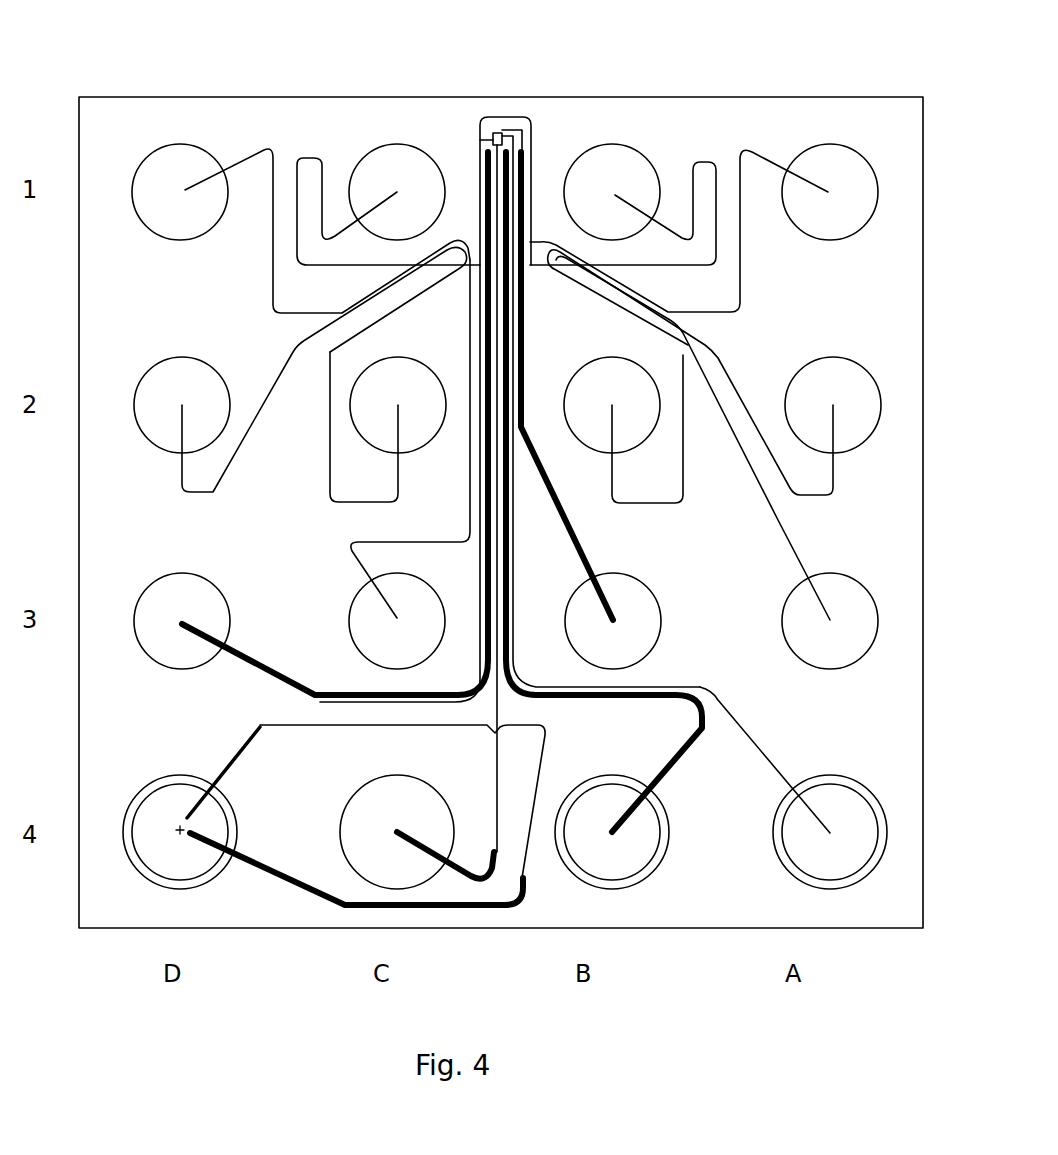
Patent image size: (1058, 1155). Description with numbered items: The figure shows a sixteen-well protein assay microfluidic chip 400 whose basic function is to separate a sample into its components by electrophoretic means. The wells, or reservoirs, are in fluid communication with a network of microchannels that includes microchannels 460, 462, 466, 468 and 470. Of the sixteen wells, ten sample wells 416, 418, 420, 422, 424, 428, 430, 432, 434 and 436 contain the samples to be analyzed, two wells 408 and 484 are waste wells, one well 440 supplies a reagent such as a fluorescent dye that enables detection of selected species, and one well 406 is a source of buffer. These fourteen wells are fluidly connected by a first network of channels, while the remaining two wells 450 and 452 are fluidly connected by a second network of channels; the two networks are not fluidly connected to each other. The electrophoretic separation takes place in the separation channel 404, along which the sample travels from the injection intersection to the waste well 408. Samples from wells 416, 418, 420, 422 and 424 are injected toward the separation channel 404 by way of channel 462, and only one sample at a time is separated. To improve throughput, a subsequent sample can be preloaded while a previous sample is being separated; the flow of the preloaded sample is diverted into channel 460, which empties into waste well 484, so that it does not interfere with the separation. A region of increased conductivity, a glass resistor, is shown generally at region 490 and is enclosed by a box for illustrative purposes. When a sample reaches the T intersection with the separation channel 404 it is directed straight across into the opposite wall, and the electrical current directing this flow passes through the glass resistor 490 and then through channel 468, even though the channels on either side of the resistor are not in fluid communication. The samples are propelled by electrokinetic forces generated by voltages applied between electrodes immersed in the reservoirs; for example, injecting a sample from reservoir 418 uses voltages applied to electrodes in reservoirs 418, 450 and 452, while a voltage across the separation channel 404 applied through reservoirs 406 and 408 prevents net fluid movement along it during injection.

The protein assay microfluidic chip 400 is at (725, 52).
The separation channel 404 is at (497, 703).
The buffer well 406 is at (613, 621).
The waste well 408 is at (417, 832).
The sample well 416 is at (301, 228).
The sample well 418 is at (300, 369).
The sample well 420 is at (409, 464).
The sample well 422 is at (388, 204).
The sample well 424 is at (388, 427).
The sample well 428 is at (623, 204).
The sample well 430 is at (623, 429).
The sample well 432 is at (717, 462).
The sample well 434 is at (704, 228).
The sample well 436 is at (714, 372).
The reagent well 440 is at (334, 815).
The second-network well 450 is at (612, 832).
The second-network well 452 is at (830, 832).
The diversion channel 460 is at (273, 665).
The injection channel 462 is at (475, 167).
The microchannel 466 is at (645, 700).
The current-return channel 468 is at (720, 702).
The microchannel 470 is at (573, 533).
The waste well 484 is at (182, 621).
The glass resistor 490 is at (492, 133).